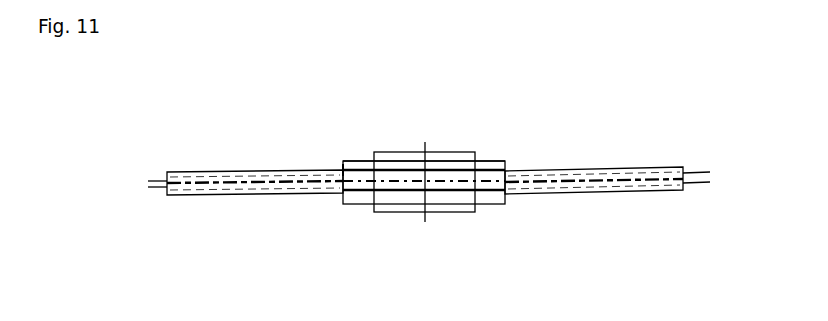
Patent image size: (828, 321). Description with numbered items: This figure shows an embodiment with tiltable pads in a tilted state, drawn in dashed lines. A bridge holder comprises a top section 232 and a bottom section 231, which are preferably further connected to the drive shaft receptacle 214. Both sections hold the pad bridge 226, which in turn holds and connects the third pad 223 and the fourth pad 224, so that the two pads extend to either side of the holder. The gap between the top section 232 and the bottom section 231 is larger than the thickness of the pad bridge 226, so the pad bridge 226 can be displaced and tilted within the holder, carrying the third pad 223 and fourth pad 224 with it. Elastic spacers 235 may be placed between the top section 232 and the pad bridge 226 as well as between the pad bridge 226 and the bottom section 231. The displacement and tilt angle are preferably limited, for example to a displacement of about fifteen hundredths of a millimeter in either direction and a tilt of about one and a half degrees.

The drive shaft receptacle 214 is at (457, 156).
The third pad 223 is at (258, 196).
The fourth pad 224 is at (587, 192).
The pad bridge 226 is at (407, 185).
The bottom section 231 is at (356, 204).
The top section 232 is at (358, 166).
The elastic spacers 235 is at (336, 165).